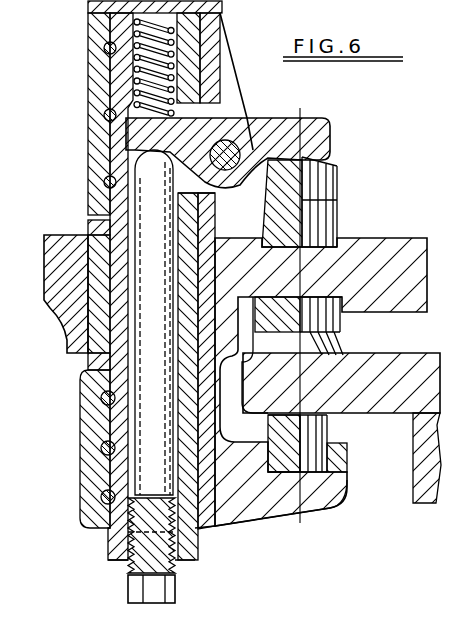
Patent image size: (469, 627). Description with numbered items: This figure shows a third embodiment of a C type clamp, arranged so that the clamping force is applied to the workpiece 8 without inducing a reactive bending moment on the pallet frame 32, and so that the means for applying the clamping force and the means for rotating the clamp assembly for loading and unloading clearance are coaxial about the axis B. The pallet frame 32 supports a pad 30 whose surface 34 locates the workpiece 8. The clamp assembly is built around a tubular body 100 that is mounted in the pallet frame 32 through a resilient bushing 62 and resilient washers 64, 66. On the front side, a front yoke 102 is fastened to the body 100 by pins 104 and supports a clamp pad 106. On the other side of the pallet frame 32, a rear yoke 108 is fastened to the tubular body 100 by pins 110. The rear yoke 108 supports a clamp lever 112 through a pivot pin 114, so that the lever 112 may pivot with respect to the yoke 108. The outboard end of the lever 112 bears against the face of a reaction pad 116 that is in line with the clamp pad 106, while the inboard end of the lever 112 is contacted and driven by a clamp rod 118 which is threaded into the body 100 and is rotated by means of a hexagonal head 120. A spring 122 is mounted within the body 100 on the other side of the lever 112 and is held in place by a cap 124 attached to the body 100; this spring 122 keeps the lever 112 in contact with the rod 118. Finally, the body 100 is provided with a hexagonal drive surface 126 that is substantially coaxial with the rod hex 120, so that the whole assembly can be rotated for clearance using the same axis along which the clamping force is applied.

The workpiece 8 is at (417, 475).
The pad 30 is at (343, 325).
The pallet frame 32 is at (410, 228).
The surface 34 is at (300, 352).
The resilient bushing 62 is at (100, 335).
The resilient washer 64 is at (88, 362).
The resilient washer 66 is at (90, 229).
The tubular body 100 is at (237, 527).
The front yoke 102 is at (323, 510).
The pins 104 is at (100, 398).
The clamp pad 106 is at (318, 433).
The rear yoke 108 is at (237, 86).
The pins 110 is at (104, 50).
The clamp lever 112 is at (332, 133).
The pivot pin 114 is at (250, 150).
The reaction pad 116 is at (335, 190).
The clamp rod 118 is at (143, 532).
The hexagonal head 120 is at (132, 588).
The spring 122 is at (172, 56).
The cap 124 is at (222, 12).
The hexagonal drive surface 126 is at (197, 557).
The axis B is at (300, 518).